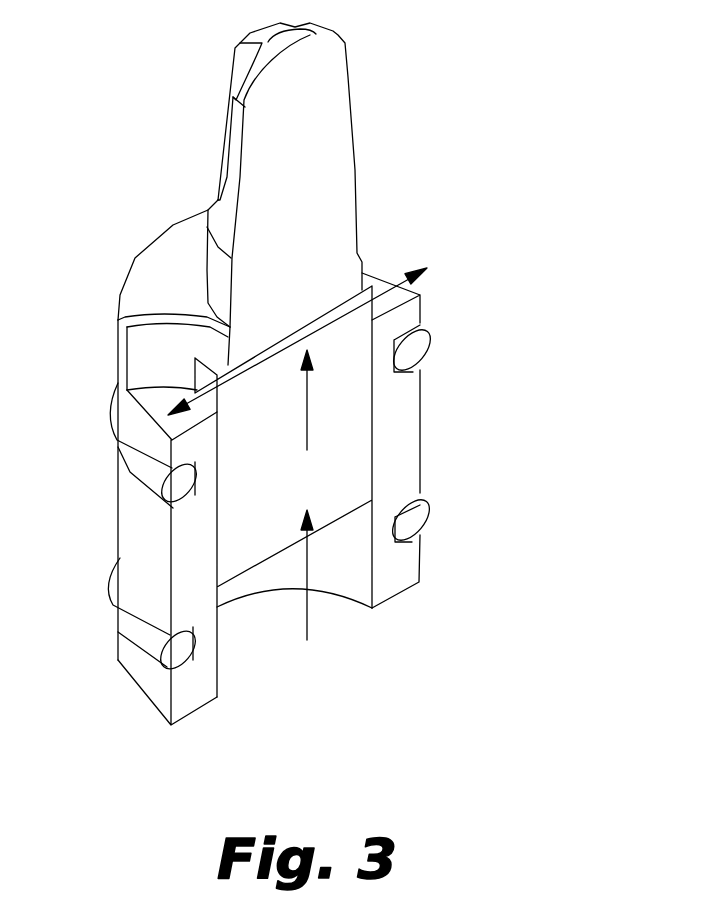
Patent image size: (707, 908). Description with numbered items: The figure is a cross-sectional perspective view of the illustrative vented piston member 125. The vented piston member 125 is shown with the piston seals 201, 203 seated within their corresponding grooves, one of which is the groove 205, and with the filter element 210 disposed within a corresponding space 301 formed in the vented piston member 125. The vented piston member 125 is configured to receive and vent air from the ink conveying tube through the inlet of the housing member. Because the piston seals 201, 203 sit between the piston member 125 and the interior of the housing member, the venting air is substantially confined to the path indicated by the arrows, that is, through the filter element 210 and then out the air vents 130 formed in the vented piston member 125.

The vented piston member 125 is at (487, 378).
The air vents 130 is at (205, 380).
The piston seal 201 is at (125, 440).
The piston seal 203 is at (113, 610).
The groove 205 is at (153, 668).
The filter element 210 is at (338, 452).
The space 301 is at (345, 575).